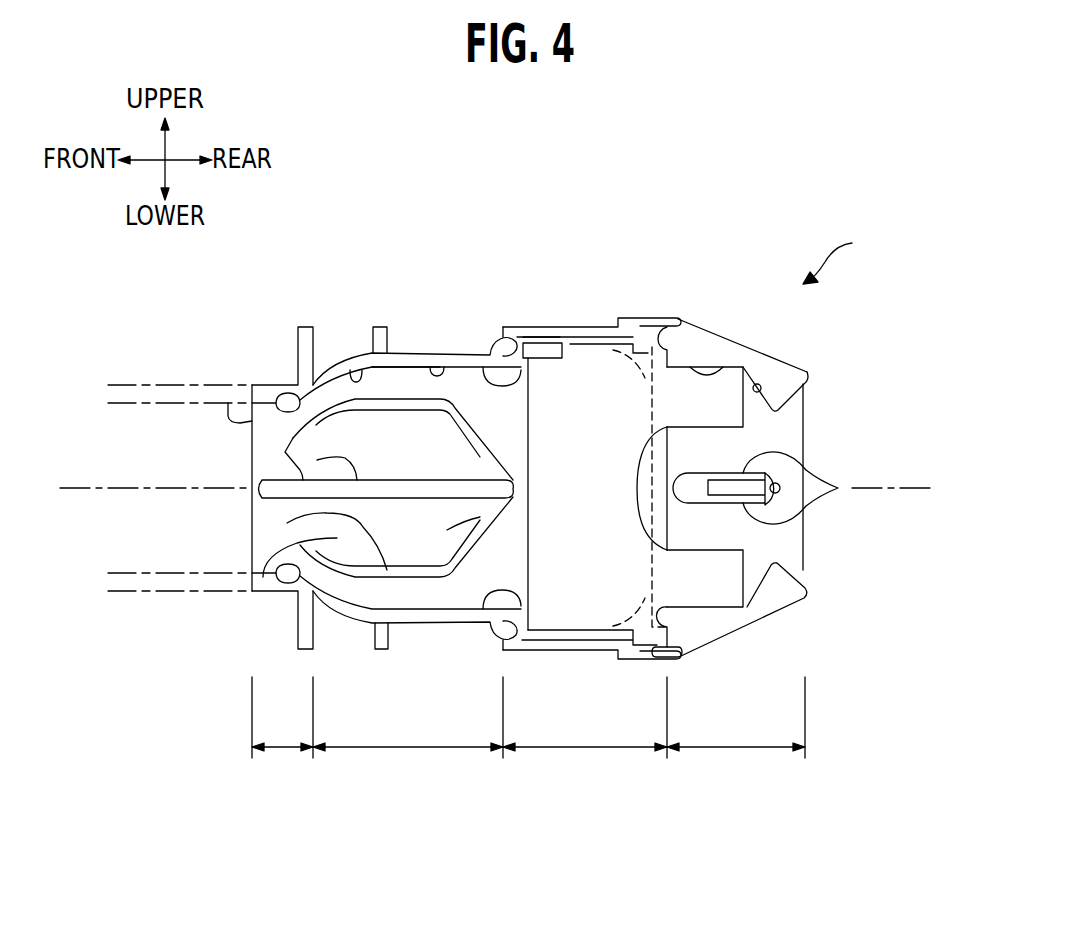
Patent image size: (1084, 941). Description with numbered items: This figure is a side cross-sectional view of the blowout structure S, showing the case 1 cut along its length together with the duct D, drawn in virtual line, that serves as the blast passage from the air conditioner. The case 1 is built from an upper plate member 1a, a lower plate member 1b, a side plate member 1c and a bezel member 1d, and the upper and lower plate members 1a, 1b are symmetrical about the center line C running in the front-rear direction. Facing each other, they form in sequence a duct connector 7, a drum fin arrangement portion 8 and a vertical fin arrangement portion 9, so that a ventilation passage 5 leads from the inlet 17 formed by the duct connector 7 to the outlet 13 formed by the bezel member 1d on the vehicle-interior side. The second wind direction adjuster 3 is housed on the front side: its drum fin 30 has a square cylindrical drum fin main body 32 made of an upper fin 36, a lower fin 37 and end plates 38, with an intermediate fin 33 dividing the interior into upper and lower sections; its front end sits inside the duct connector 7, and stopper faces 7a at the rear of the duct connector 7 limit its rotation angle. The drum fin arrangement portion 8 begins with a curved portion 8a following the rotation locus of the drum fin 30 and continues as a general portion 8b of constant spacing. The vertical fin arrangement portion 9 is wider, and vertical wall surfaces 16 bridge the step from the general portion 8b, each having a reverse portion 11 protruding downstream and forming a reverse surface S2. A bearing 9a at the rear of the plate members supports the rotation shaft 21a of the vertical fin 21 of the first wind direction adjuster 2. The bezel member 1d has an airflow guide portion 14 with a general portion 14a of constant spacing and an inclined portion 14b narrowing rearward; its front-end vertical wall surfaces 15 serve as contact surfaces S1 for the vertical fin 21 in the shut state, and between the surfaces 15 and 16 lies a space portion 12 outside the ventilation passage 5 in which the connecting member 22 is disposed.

The case 1 is at (563, 327).
The upper plate member 1a is at (340, 352).
The lower plate member 1b is at (437, 622).
The side plate member 1c is at (415, 352).
The bezel member 1d is at (807, 381).
The first wind direction adjuster 2 is at (591, 490).
The vertical fin 21 is at (630, 333).
The rotation shaft 21a is at (653, 318).
The second wind direction adjuster 3 is at (209, 508).
The drum fin 30 is at (256, 598).
The ventilation passage 5 is at (504, 421).
The duct connector 7 is at (280, 750).
The stopper faces 7a is at (280, 394).
The drum fin arrangement portion 8 is at (410, 750).
The curved portion 8a is at (353, 370).
The general portion 8b is at (437, 365).
The vertical fin arrangement portion 9 is at (585, 750).
The bearing 9a is at (663, 318).
The reverse portion 11 is at (490, 352).
The space portion 12 is at (568, 340).
The outlet 13 is at (806, 572).
The airflow guide portion 14 is at (740, 750).
The general portion 14a is at (733, 341).
The inclined portion 14b is at (782, 383).
The vertical wall surface 15 is at (731, 485).
The contact surface S1 is at (672, 343).
The vertical wall surface 16 is at (465, 462).
The reverse surface S2 is at (507, 337).
The inlet 17 is at (228, 403).
The connecting member 22 is at (542, 347).
The drum fin main body 32 is at (483, 450).
The intermediate fin 33 is at (320, 480).
The upper fin 36 is at (293, 438).
The lower fin 37 is at (290, 522).
The end plates 38 is at (483, 538).
The blowout structure S is at (838, 251).
The duct D is at (146, 385).
The center line C is at (933, 490).